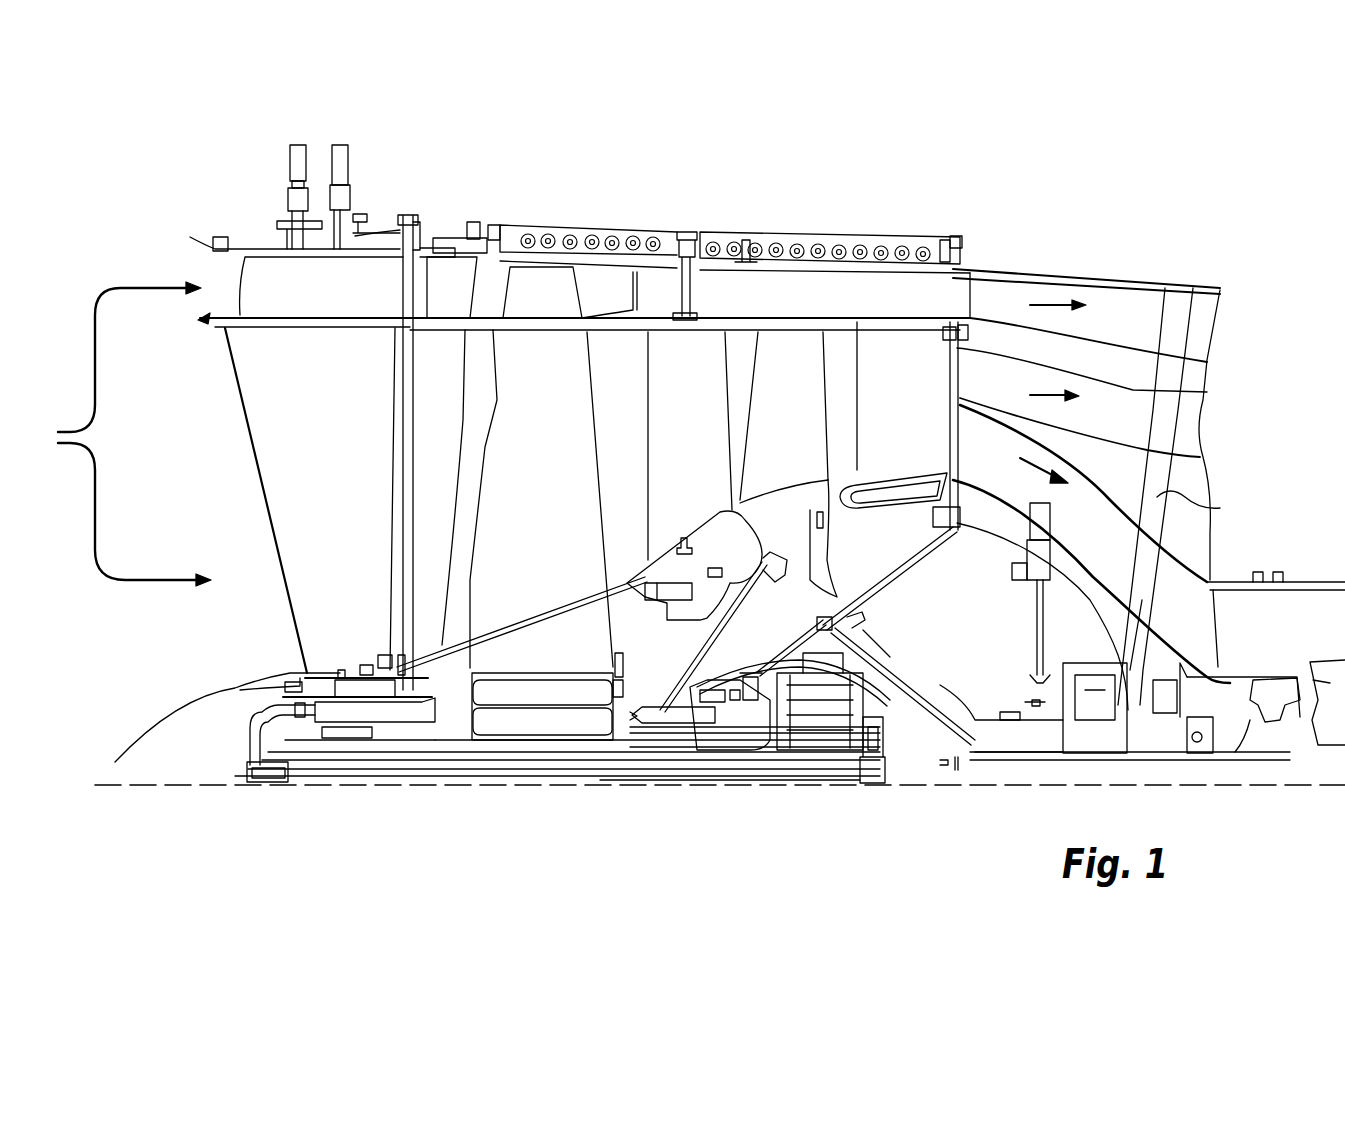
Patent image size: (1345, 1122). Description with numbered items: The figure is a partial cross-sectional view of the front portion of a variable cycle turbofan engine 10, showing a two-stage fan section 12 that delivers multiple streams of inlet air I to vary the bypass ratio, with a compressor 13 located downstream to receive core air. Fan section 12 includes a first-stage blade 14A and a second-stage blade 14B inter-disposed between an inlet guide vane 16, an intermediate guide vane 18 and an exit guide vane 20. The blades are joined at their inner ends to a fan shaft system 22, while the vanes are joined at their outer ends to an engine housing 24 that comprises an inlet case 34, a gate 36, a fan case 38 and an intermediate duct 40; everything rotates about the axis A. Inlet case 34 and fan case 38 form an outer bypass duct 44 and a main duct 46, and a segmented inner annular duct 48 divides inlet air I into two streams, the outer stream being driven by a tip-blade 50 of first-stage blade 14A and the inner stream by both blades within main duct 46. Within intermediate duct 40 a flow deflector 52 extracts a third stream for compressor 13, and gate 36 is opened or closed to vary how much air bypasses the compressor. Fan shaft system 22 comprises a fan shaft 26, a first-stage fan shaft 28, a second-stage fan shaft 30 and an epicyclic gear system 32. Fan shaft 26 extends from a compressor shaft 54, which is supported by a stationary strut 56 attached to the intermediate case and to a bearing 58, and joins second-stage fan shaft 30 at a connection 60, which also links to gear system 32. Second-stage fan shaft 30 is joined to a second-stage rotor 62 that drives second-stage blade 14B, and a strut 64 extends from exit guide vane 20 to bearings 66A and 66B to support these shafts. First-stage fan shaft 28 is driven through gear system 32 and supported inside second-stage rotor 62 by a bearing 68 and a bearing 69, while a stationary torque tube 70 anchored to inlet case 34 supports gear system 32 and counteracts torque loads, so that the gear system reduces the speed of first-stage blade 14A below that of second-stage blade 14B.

The variable cycle turbofan engine 10 is at (1060, 145).
The two-stage fan section 12 is at (727, 212).
The compressor 13 is at (1312, 548).
The first-stage blade 14A is at (548, 496).
The second-stage blade 14B is at (792, 441).
The inlet guide vane 16 is at (322, 482).
The intermediate guide vane 18 is at (692, 448).
The exit guide vane 20 is at (908, 423).
The fan shaft system 22 is at (517, 805).
The engine housing 24 is at (548, 196).
The fan shaft 26 is at (933, 737).
The first-stage fan shaft 28 is at (740, 753).
The second-stage fan shaft 30 is at (775, 752).
The epicyclic gear system 32 is at (868, 783).
The inlet case 34 is at (259, 248).
The gate 36 is at (448, 237).
The fan case 38 is at (658, 232).
The intermediate duct 40 is at (1105, 275).
The outer bypass duct 44 is at (466, 298).
The main duct 46 is at (490, 393).
The inner annular duct 48 is at (205, 323).
The tip-blade 50 is at (550, 308).
The flow deflector 52 is at (1087, 437).
The compressor shaft 54 is at (1245, 755).
The strut 56 is at (1205, 503).
The bearing 58 is at (1195, 750).
The connection 60 is at (868, 668).
The second-stage rotor 62 is at (740, 598).
The strut 64 is at (915, 555).
The bearing 66A is at (958, 712).
The bearing 66B is at (770, 636).
The bearing 68 is at (622, 760).
The bearing 69 is at (376, 697).
The stationary torque tube 70 is at (312, 760).
The axis A is at (188, 790).
The inlet air I is at (48, 437).